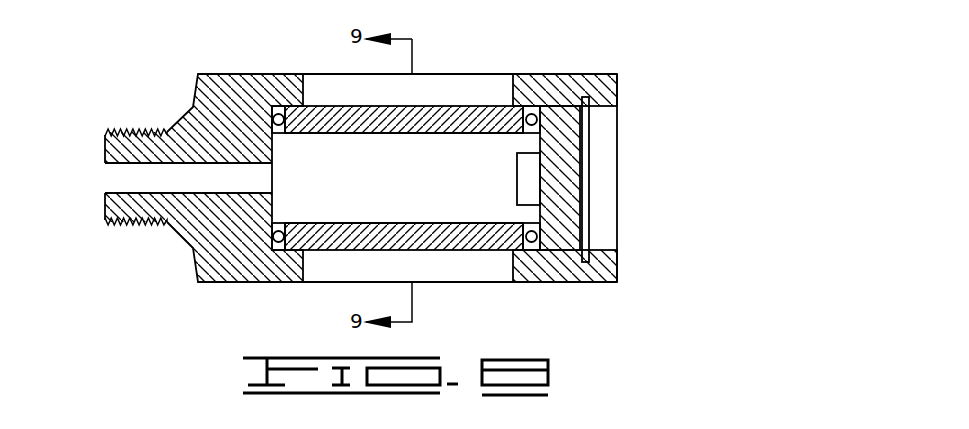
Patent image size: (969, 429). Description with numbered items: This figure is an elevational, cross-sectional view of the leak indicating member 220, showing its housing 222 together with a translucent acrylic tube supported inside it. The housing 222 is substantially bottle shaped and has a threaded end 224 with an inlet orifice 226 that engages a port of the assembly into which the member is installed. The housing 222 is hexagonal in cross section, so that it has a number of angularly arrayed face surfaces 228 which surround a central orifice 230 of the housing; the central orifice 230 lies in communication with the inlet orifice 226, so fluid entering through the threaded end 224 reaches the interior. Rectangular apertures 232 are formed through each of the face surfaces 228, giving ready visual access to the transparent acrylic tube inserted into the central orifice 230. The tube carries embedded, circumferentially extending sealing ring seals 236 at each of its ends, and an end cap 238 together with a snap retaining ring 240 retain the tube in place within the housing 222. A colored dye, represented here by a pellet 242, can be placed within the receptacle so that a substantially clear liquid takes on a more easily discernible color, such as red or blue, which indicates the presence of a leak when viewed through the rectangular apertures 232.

The leak indicating member 220 is at (175, 60).
The housing 222 is at (197, 253).
The threaded end 224 is at (145, 130).
The inlet orifice 226 is at (153, 192).
The face surfaces 228 is at (552, 74).
The central orifice 230 is at (470, 168).
The rectangular apertures 232 is at (303, 90).
The sealing ring seals 236 is at (273, 243).
The end cap 238 is at (565, 205).
The snap retaining ring 240 is at (590, 173).
The pellet 242 is at (527, 173).